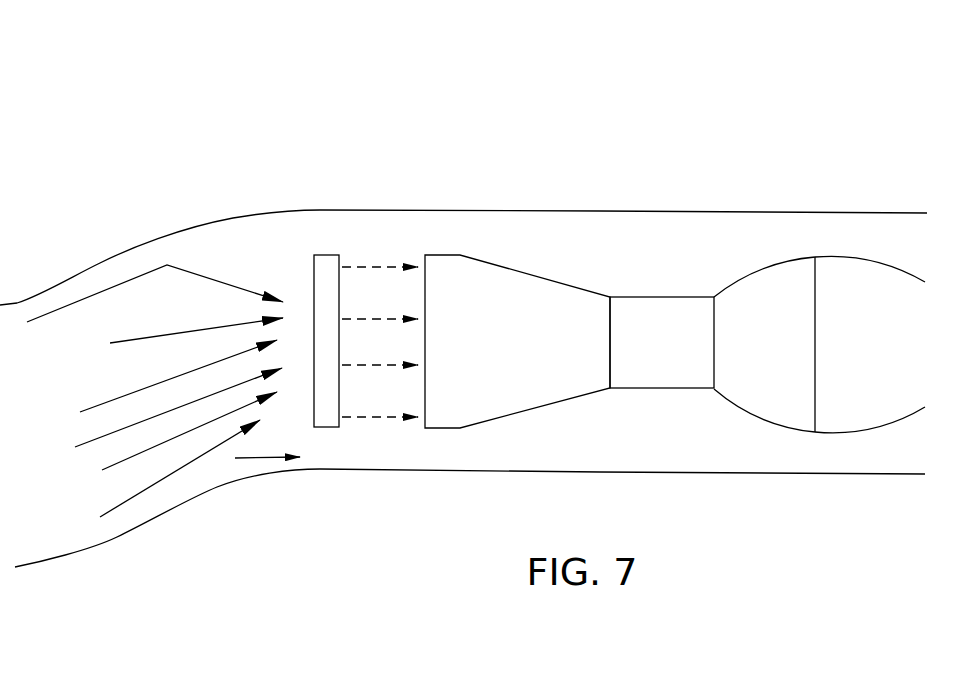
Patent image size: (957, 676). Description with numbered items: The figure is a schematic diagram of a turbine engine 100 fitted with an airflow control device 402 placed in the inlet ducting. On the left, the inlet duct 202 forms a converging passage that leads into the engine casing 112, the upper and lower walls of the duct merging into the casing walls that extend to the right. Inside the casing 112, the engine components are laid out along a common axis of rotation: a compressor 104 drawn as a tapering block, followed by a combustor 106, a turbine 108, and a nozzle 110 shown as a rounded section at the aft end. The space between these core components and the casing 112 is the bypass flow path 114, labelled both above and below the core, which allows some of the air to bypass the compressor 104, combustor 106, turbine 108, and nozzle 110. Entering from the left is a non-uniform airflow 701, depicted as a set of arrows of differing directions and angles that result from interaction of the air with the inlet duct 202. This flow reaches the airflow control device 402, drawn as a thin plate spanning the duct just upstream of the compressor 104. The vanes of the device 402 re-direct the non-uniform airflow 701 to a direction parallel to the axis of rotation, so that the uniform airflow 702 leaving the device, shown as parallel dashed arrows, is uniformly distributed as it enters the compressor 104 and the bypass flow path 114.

The turbine engine 100 is at (873, 102).
The inlet duct 202 is at (194, 226).
The engine casing 112 is at (695, 212).
The airflow control device 402 is at (330, 260).
The non-uniform airflow 701 is at (163, 391).
The uniform airflow 702 is at (372, 416).
The compressor 104 is at (494, 316).
The combustor 106 is at (649, 326).
The turbine 108 is at (749, 321).
The nozzle 110 is at (854, 314).
The bypass flow path 114 is at (637, 259).